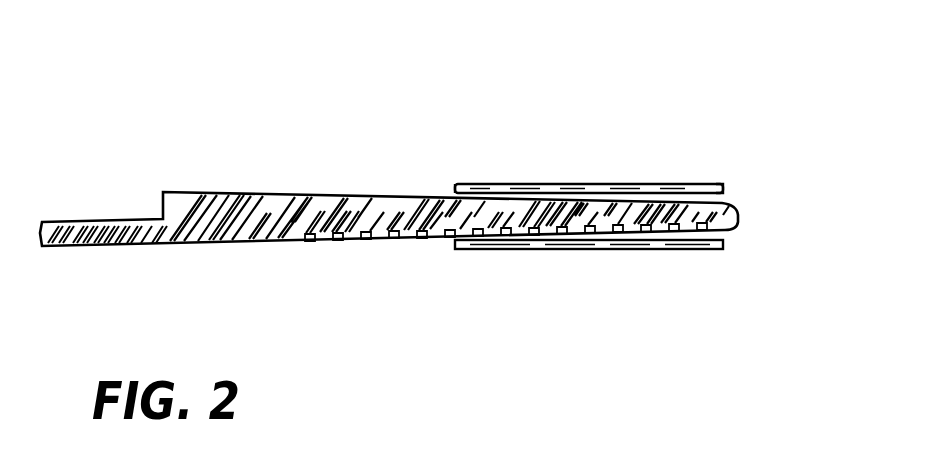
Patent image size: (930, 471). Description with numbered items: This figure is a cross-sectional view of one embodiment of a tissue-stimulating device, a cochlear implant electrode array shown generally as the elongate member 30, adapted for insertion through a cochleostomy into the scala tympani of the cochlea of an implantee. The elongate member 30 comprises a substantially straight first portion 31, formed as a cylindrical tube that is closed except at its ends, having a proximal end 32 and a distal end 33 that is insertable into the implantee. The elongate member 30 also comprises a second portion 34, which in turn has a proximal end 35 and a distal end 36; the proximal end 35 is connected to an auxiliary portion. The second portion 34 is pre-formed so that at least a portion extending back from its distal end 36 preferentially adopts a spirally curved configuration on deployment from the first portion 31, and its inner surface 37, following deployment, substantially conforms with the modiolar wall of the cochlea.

The elongate member 30 is at (613, 85).
The first portion 31 is at (689, 184).
The proximal end 32 is at (456, 188).
The distal end 33 is at (725, 190).
The second portion 34 is at (302, 243).
The proximal end 35 is at (160, 192).
The distal end 36 is at (736, 222).
The inner surface 37 is at (412, 240).